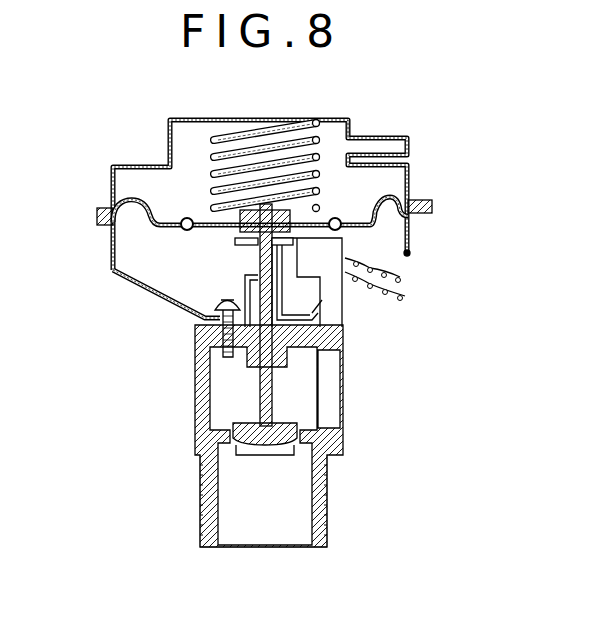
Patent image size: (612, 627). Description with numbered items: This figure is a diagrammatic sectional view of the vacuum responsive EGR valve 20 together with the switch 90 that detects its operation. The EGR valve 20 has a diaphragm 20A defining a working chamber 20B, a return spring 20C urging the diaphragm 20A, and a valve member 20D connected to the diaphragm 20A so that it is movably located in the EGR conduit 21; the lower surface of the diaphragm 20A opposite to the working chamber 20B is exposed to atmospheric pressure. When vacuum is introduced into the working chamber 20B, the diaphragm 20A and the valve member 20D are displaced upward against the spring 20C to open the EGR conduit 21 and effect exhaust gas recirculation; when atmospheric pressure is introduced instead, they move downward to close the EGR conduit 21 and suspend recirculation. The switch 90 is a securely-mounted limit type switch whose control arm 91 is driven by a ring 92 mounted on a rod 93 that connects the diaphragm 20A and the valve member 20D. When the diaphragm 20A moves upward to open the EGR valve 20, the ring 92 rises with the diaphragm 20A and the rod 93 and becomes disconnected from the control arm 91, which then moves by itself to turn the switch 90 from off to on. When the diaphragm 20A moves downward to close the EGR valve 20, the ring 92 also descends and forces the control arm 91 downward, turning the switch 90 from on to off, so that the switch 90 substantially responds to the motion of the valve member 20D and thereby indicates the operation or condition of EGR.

The EGR valve 20 is at (163, 118).
The diaphragm 20A is at (388, 198).
The working chamber 20B is at (265, 140).
The return spring 20C is at (312, 135).
The valve member 20D is at (243, 418).
The EGR conduit 21 is at (326, 530).
The switch 90 is at (330, 302).
The control arm 91 is at (320, 253).
The ring 92 is at (252, 242).
The rod 93 is at (258, 253).